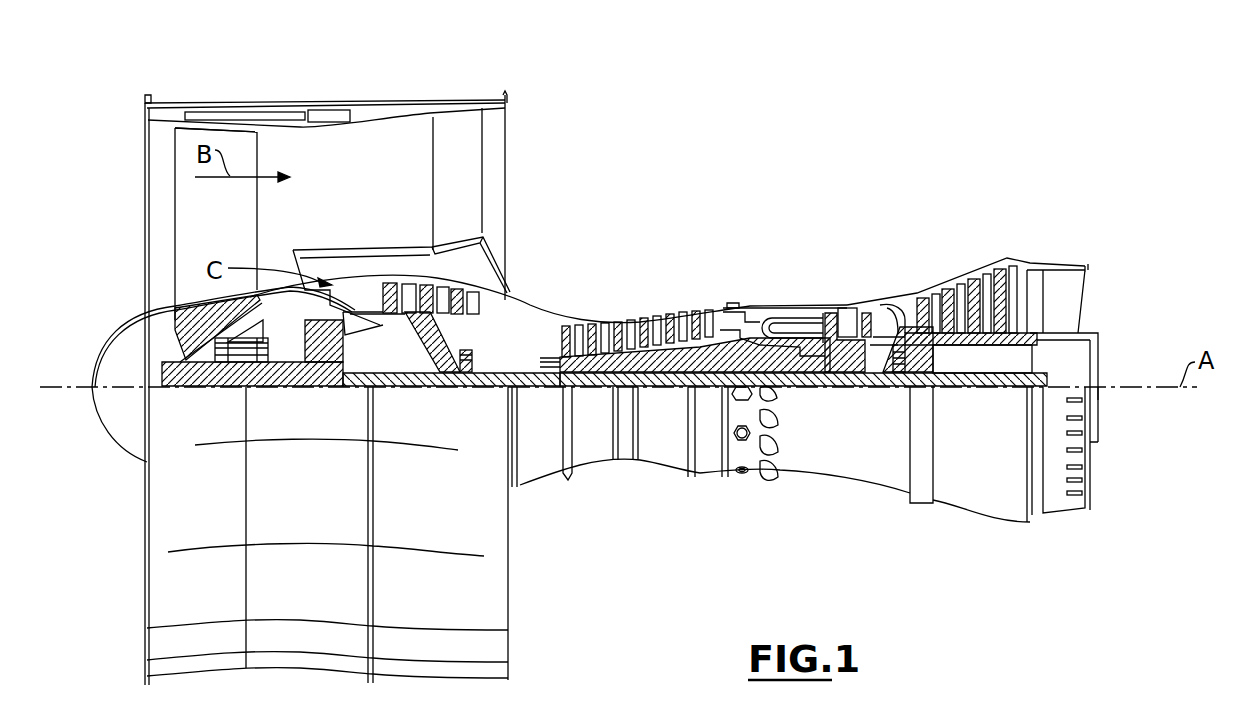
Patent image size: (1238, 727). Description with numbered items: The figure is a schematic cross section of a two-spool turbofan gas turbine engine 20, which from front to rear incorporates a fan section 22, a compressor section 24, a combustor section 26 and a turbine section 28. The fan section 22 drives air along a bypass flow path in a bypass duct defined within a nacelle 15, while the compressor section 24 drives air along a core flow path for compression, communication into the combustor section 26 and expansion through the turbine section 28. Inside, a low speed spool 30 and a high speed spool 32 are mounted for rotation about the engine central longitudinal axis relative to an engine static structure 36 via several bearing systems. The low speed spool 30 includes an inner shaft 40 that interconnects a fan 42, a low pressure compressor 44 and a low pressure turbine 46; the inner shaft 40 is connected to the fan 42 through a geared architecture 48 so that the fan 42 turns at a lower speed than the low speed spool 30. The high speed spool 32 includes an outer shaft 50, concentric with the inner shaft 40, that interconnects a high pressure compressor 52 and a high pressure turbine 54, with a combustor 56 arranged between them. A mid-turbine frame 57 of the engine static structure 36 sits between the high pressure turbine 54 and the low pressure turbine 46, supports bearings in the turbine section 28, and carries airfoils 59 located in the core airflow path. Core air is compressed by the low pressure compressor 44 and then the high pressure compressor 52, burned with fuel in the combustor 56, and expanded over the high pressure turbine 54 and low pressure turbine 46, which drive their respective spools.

The nacelle 15 is at (328, 110).
The gas turbine engine 20 is at (785, 152).
The fan section 22 is at (255, 97).
The compressor section 24 is at (557, 298).
The combustor section 26 is at (782, 286).
The turbine section 28 is at (928, 248).
The low speed spool 30 is at (666, 390).
The high speed spool 32 is at (712, 340).
The engine static structure 36 is at (707, 475).
The inner shaft 40 is at (530, 395).
The fan 42 is at (230, 232).
The low pressure compressor 44 is at (395, 300).
The low pressure turbine 46 is at (975, 280).
The geared architecture 48 is at (330, 372).
The outer shaft 50 is at (790, 387).
The high pressure compressor 52 is at (640, 347).
The high pressure turbine 54 is at (848, 300).
The combustor 56 is at (780, 322).
The mid-turbine frame 57 is at (890, 300).
The airfoils 59 is at (887, 322).